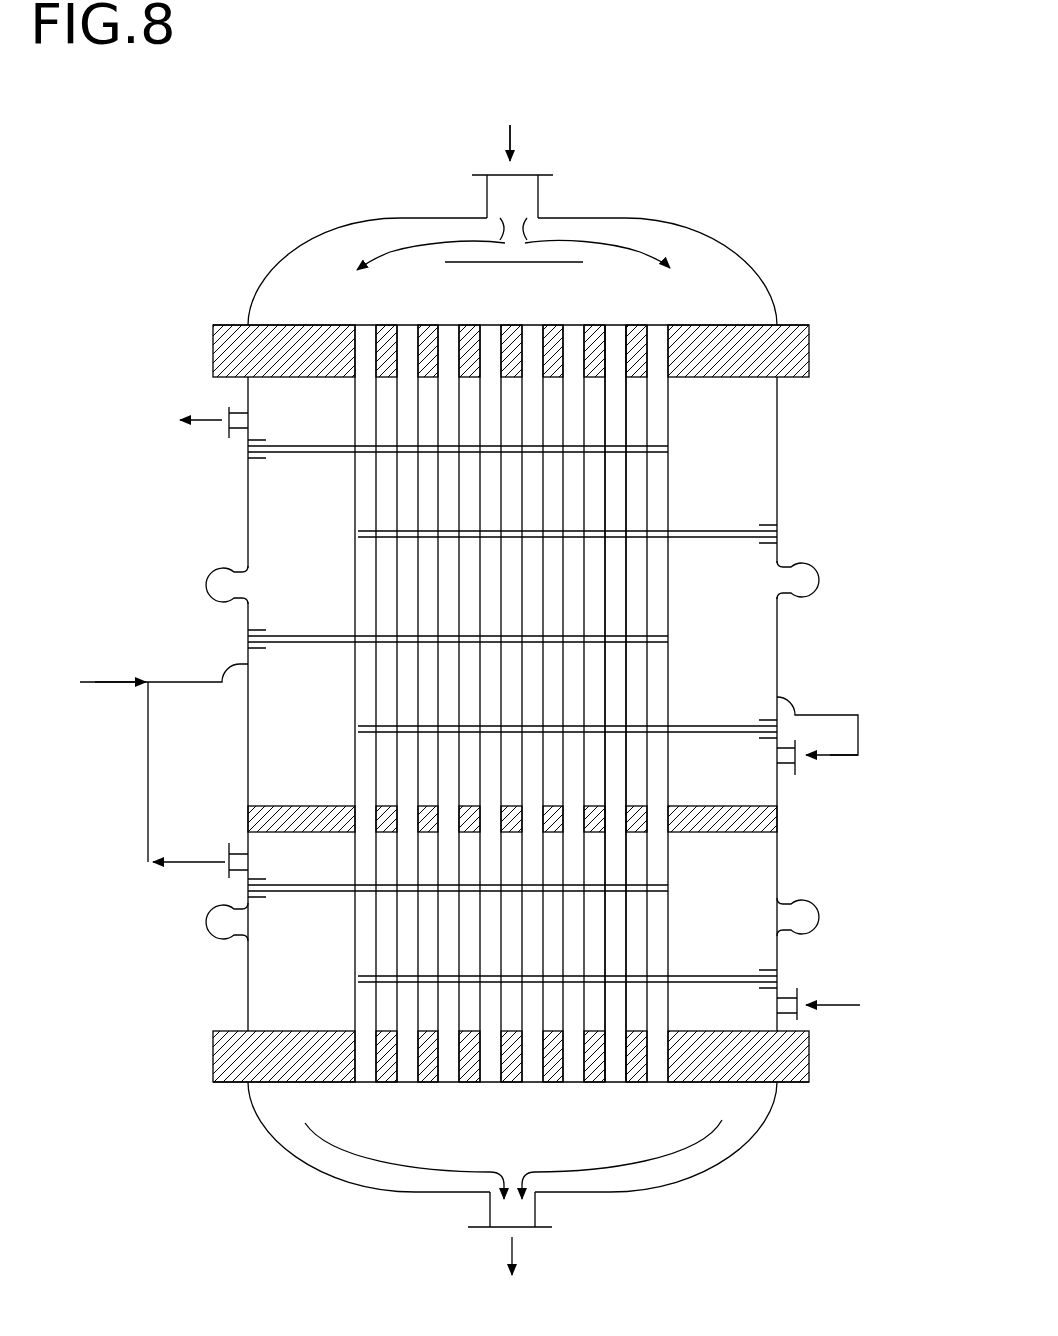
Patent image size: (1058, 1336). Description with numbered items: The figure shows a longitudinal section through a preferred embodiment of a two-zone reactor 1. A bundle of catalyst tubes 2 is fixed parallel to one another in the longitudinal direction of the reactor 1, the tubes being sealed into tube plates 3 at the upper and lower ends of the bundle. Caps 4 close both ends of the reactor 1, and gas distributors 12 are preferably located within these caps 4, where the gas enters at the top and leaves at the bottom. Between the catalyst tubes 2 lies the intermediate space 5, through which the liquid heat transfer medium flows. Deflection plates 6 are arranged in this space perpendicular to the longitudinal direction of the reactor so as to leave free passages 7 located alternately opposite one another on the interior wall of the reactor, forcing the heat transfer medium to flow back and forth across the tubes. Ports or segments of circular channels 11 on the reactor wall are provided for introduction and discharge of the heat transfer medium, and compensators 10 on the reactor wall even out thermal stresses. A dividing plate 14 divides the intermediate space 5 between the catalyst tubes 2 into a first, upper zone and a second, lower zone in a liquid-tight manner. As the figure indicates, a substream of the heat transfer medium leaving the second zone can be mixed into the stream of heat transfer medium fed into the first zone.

The reactor 1 is at (345, 205).
The catalyst tubes 2 is at (658, 485).
The tube plates 3 is at (718, 345).
The caps 4 is at (707, 228).
The intermediate space 5 is at (640, 413).
The deflection plates 6 is at (325, 455).
The passages 7 is at (740, 428).
The compensator 10 is at (827, 577).
The ports or segments of circular channels 11 is at (238, 410).
The gas distributors 12 is at (530, 261).
The dividing plate 14 is at (777, 812).